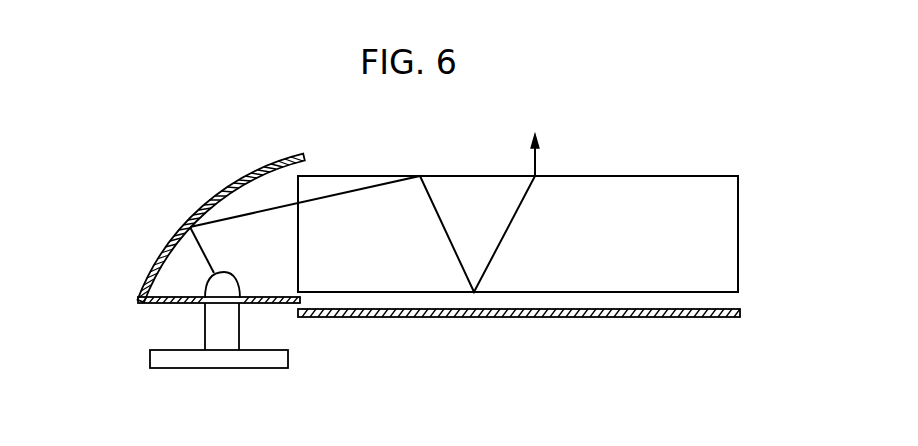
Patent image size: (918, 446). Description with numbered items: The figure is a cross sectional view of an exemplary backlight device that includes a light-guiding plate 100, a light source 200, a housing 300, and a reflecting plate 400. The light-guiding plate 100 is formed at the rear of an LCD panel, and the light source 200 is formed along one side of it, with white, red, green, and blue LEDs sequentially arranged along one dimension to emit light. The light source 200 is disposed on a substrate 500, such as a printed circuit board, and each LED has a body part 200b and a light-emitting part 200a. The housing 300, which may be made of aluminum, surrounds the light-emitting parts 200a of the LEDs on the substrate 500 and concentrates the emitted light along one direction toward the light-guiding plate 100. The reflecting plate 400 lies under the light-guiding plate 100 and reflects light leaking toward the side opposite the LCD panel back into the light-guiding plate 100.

The light-guiding plate 100 is at (727, 240).
The light source 200 is at (165, 289).
The light-emitting part 200a is at (212, 285).
The body part 200b is at (212, 330).
The housing 300 is at (248, 176).
The reflecting plate 400 is at (711, 318).
The substrate 500 is at (255, 358).